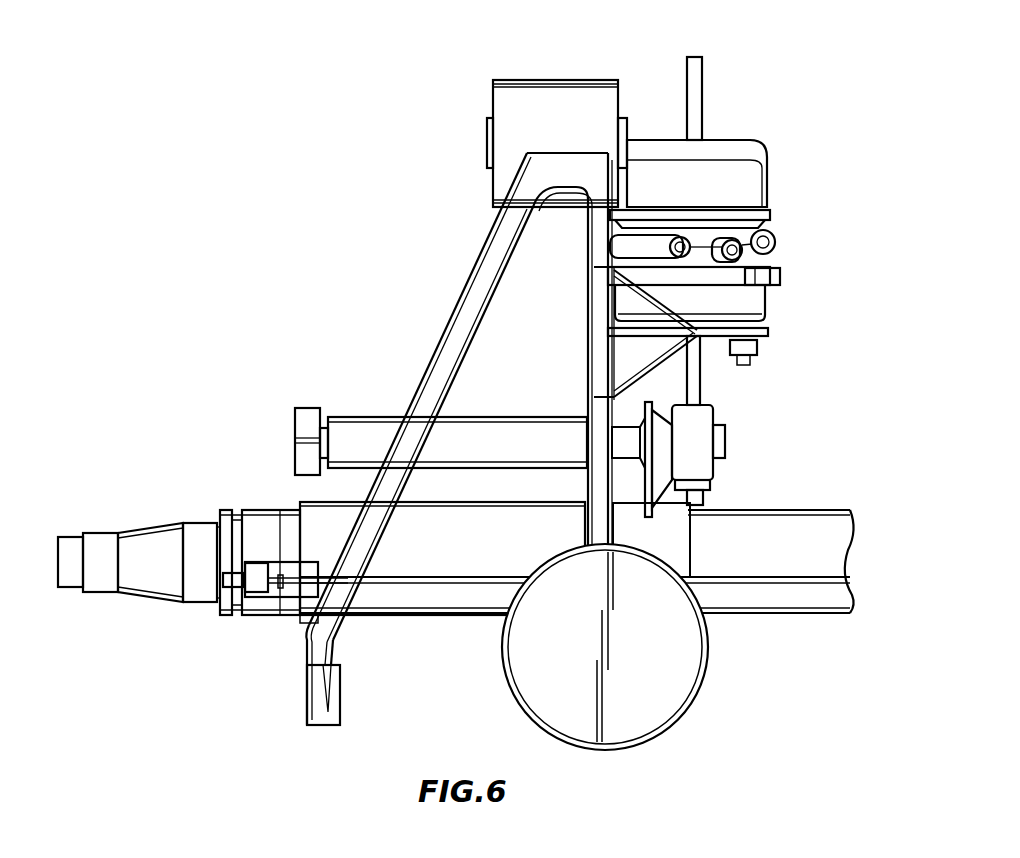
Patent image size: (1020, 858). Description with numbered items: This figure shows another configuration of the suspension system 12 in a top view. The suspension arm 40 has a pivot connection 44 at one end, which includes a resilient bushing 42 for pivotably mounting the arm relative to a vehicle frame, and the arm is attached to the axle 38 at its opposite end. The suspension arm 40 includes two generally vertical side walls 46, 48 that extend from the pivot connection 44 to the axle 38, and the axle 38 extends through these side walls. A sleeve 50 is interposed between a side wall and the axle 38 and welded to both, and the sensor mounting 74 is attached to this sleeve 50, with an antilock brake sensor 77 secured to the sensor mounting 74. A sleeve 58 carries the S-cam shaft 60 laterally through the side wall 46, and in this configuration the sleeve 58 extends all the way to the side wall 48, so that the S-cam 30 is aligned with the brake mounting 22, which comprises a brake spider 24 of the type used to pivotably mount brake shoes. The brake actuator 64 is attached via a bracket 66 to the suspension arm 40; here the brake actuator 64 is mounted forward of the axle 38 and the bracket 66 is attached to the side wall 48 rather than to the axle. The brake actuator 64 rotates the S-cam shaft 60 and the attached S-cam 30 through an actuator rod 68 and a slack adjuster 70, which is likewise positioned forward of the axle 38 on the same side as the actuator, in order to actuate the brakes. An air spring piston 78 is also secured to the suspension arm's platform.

The suspension system 12 is at (262, 100).
The brake mounting 22 is at (298, 659).
The brake spider 24 is at (341, 717).
The S-cam 30 is at (296, 425).
The axle 38 is at (801, 617).
The suspension arm 40 is at (461, 300).
The resilient bushing 42 is at (486, 157).
The pivot connection 44 is at (528, 78).
The side wall 46 is at (432, 361).
The side wall 48 is at (585, 297).
The sleeve 50 is at (481, 620).
The sleeve 58 is at (476, 418).
The S-cam shaft 60 is at (622, 462).
The brake actuator 64 is at (768, 152).
The bracket 66 is at (653, 367).
The actuator rod 68 is at (701, 388).
The slack adjuster 70 is at (714, 418).
The sensor mounting 74 is at (256, 556).
The antilock brake sensor 77 is at (217, 578).
The air spring piston 78 is at (668, 733).